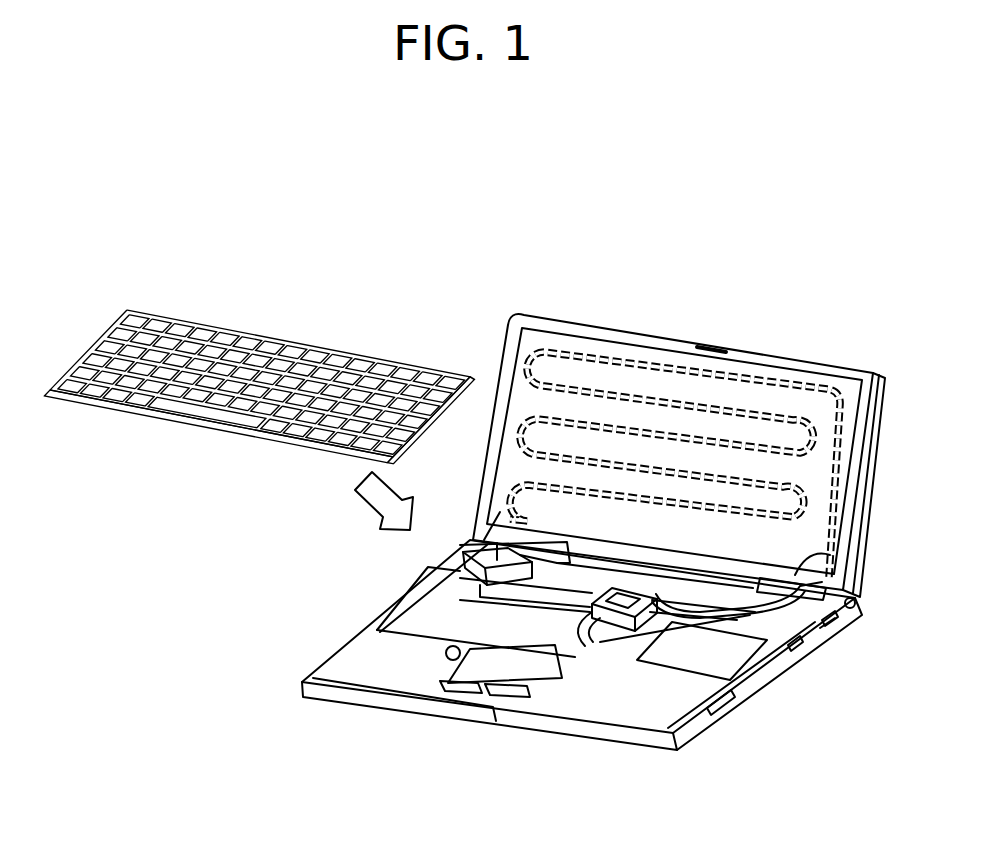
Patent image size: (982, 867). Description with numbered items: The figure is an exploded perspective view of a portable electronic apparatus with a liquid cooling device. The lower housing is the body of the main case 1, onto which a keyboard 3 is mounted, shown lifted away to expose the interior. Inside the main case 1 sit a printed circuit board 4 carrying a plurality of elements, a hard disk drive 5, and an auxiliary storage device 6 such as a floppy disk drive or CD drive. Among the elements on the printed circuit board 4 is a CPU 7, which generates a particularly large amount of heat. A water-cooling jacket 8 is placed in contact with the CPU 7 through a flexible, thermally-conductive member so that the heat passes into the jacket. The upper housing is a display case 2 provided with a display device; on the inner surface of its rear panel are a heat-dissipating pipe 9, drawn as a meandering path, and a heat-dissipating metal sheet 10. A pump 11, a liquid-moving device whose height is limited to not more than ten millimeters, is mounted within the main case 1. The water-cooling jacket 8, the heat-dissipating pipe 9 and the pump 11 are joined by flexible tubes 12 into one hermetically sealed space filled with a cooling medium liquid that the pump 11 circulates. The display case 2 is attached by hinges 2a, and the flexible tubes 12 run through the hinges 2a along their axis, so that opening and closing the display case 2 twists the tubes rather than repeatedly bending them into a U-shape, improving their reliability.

The main case 1 is at (700, 737).
The display case 2 is at (668, 338).
The hinges 2a is at (507, 520).
The keyboard 3 is at (333, 347).
The printed circuit board 4 is at (823, 630).
The hard disk drive 5 is at (723, 653).
The auxiliary storage device 6 is at (417, 615).
The CPU 7 is at (624, 614).
The water-cooling jacket 8 is at (597, 622).
The heat-dissipating pipe 9 is at (818, 392).
The heat-dissipating metal sheet 10 is at (538, 333).
The pump 11 is at (433, 572).
The flexible tubes 12 is at (507, 607).